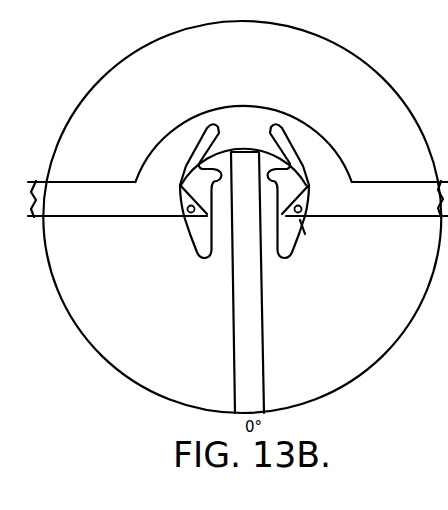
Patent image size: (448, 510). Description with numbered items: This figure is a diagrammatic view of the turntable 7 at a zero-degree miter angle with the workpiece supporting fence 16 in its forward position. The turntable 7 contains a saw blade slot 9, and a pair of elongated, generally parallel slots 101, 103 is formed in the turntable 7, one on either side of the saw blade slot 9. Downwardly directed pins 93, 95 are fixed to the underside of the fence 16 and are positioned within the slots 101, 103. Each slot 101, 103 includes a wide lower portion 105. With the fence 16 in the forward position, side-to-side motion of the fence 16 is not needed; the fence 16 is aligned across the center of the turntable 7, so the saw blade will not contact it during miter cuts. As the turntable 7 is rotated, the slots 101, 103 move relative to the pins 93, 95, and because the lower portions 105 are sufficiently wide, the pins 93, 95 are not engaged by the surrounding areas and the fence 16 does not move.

The turntable 7 is at (362, 55).
The workpiece supporting fence 16 is at (336, 142).
The saw blade slot 9 is at (254, 312).
The pin 93 is at (307, 205).
The pin 95 is at (186, 209).
The slot 101 is at (303, 242).
The slot 103 is at (198, 256).
The lower portion 105 is at (306, 228).